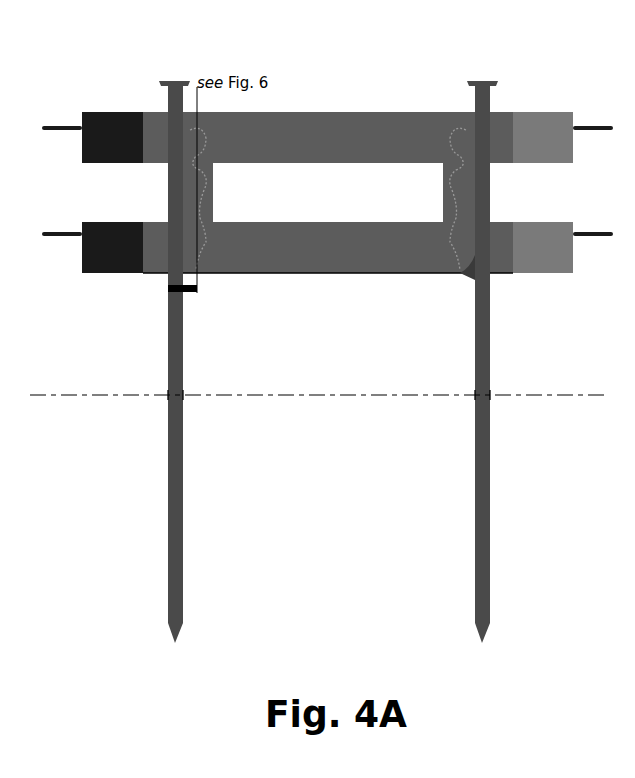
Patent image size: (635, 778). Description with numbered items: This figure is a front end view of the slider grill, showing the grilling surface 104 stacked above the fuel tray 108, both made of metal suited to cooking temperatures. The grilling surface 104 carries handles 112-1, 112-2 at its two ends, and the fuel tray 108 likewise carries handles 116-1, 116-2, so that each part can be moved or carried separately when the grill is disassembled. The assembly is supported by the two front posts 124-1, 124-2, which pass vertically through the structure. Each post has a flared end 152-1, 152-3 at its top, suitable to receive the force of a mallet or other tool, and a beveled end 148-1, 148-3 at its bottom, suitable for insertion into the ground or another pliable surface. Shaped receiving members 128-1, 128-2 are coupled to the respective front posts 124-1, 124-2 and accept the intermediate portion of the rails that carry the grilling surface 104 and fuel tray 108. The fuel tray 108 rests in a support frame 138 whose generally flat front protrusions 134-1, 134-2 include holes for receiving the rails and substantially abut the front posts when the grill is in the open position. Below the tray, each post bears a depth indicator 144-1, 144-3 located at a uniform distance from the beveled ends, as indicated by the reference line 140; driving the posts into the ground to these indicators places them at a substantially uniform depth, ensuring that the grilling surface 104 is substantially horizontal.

The grilling surface 104 is at (311, 114).
The fuel tray 108 is at (362, 232).
The handle 112-1 is at (606, 122).
The handle 112-2 is at (46, 122).
The handle 116-1 is at (606, 246).
The handle 116-2 is at (46, 244).
The front post 124-1 is at (184, 520).
The front post 124-2 is at (491, 520).
The shaped receiving member 128-1 is at (196, 288).
The shaped receiving member 128-2 is at (475, 282).
The front protrusion 134-1 is at (232, 199).
The front protrusion 134-2 is at (444, 208).
The support frame 138 is at (356, 276).
The reference line 140 is at (280, 394).
The depth indicator 144-1 is at (491, 394).
The depth indicator 144-3 is at (167, 394).
The beveled end 148-1 is at (487, 636).
The beveled end 148-3 is at (179, 636).
The flared end 152-1 is at (498, 84).
The flared end 152-3 is at (160, 83).